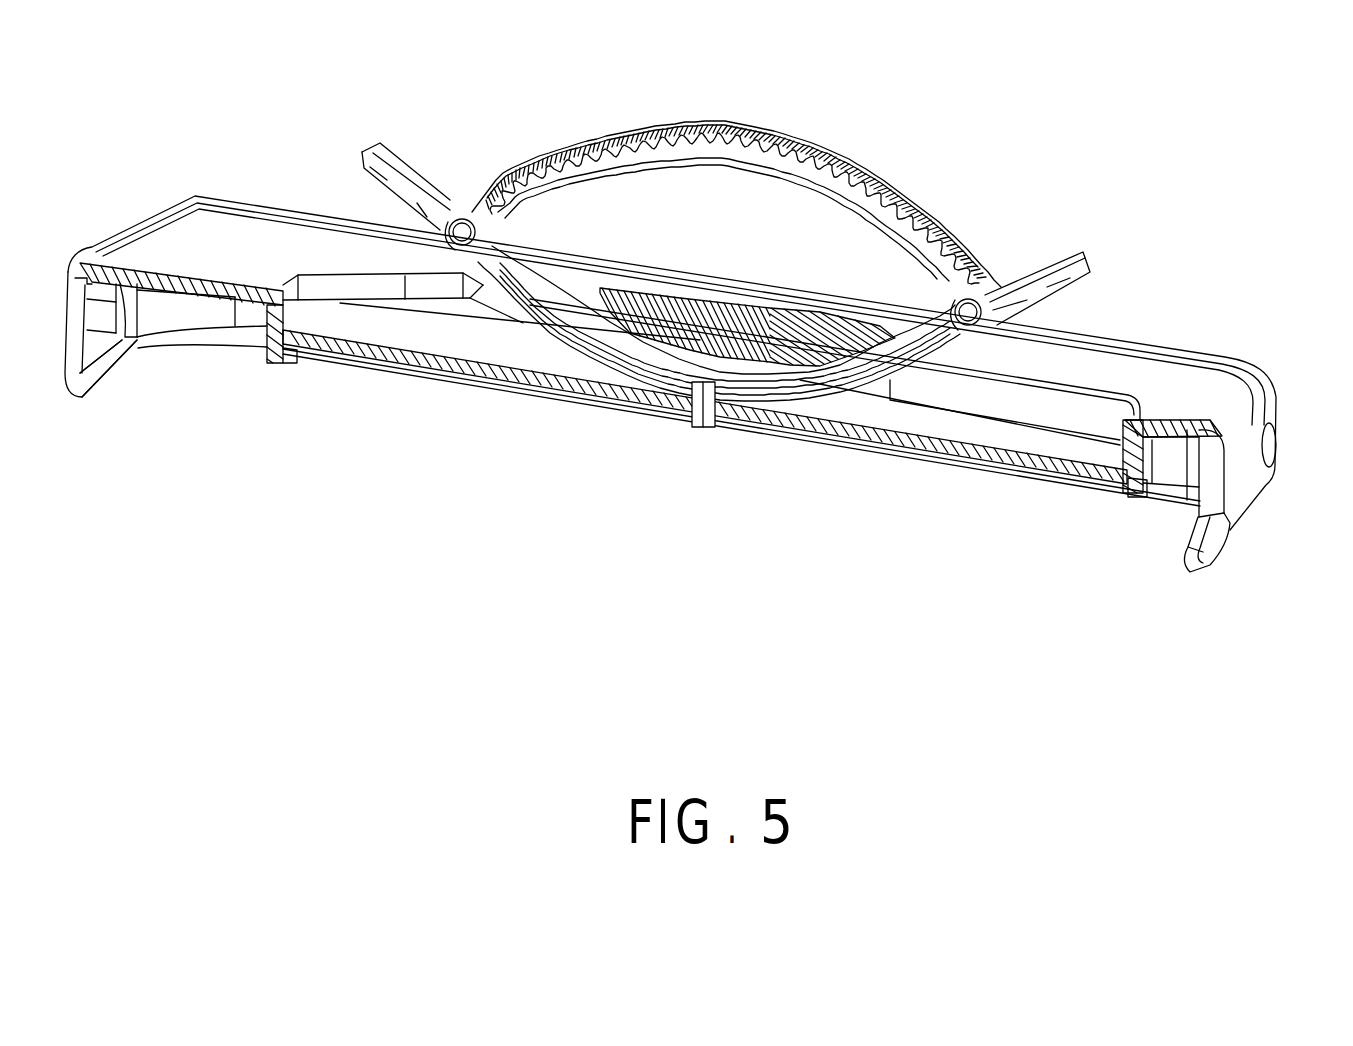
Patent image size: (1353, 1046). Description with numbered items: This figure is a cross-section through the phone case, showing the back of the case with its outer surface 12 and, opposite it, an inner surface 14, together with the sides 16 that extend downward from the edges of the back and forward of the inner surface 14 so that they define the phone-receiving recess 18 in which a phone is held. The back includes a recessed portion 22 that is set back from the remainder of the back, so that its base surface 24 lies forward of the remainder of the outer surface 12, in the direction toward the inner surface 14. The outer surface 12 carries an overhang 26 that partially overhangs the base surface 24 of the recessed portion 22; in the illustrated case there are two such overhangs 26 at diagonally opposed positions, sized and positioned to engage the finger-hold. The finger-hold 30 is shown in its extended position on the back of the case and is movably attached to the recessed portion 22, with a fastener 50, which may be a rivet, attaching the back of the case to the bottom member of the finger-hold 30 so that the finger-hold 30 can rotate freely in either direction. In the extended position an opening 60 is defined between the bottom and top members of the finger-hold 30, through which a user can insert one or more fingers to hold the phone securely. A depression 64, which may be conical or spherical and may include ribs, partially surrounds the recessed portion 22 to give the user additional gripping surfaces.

The outer surface 12 is at (193, 238).
The inner surface 14 is at (141, 369).
The sides 16 is at (93, 348).
The phone-receiving recess 18 is at (1173, 510).
The recessed portion 22 is at (990, 432).
The base surface 24 is at (398, 340).
The overhang 26 is at (410, 298).
The finger-hold 30 is at (893, 187).
The fastener 50 is at (703, 405).
The opening 60 is at (767, 248).
The depression 64 is at (697, 310).